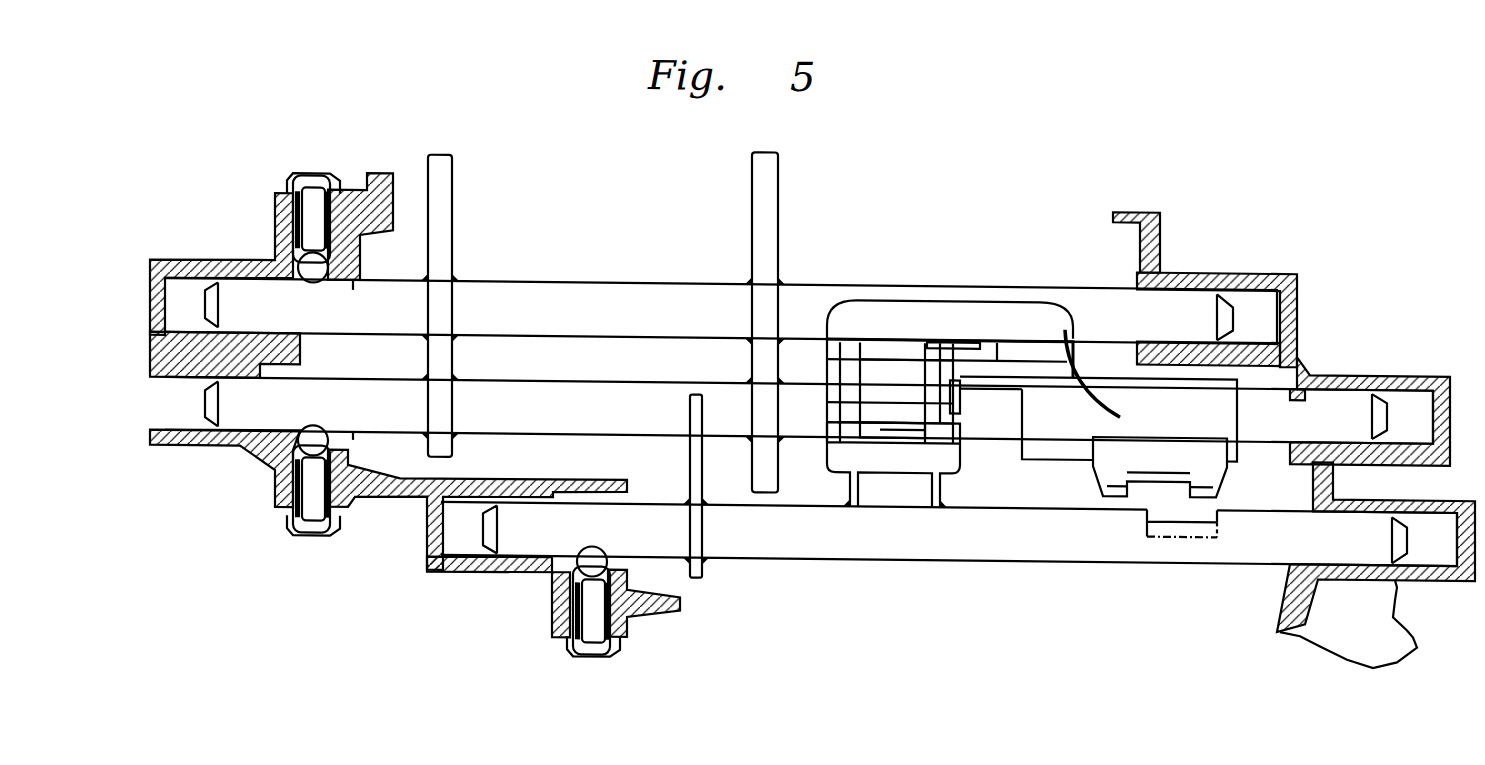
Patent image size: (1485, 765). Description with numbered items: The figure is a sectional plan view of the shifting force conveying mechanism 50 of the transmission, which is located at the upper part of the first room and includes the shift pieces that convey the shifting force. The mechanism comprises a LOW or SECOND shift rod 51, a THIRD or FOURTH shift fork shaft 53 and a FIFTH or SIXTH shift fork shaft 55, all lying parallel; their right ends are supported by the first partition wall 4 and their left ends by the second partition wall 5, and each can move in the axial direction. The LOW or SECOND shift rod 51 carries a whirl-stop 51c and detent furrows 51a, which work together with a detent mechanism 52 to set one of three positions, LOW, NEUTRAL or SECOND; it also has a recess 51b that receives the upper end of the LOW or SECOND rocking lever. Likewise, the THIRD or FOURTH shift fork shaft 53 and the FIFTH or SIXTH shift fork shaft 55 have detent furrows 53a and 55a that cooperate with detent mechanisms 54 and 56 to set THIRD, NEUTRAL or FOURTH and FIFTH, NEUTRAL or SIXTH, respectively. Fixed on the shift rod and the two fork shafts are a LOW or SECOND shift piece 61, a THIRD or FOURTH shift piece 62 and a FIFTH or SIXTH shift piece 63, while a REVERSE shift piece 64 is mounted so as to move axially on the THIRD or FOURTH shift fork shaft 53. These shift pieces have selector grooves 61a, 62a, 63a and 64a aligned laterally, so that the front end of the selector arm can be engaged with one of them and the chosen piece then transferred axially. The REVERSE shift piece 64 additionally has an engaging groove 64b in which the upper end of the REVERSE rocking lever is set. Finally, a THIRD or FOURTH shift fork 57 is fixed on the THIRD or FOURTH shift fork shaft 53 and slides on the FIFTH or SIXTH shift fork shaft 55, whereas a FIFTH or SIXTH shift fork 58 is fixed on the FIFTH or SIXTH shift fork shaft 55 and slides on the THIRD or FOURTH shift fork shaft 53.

The first partition wall 4 is at (1307, 352).
The second partition wall 5 is at (408, 484).
The shifting force conveying mechanism 50 is at (1203, 155).
The LOW or SECOND shift rod 51 is at (828, 534).
The detent furrows 51a is at (645, 581).
The recess 51b is at (1167, 504).
The whirl-stop 51c is at (690, 453).
The detent mechanism 52 is at (563, 574).
The THIRD or FOURTH shift fork shaft 53 is at (605, 403).
The detent furrows 53a is at (358, 433).
The detent mechanism 54 is at (273, 460).
The FIFTH or SIXTH shift fork shaft 55 is at (608, 293).
The detent furrows 55a is at (357, 274).
The detent mechanism 56 is at (285, 257).
The THIRD or FOURTH shift fork 57 is at (452, 210).
The FIFTH or SIXTH shift fork 58 is at (772, 186).
The LOW or SECOND shift piece 61 is at (927, 470).
The selector groove 61a is at (912, 422).
The THIRD or FOURTH shift piece 62 is at (973, 386).
The selector groove 62a is at (885, 385).
The FIFTH or SIXTH shift piece 63 is at (833, 361).
The selector groove 63a is at (907, 366).
The REVERSE shift piece 64 is at (1030, 305).
The selector groove 64a is at (878, 340).
The engaging groove 64b is at (1147, 469).